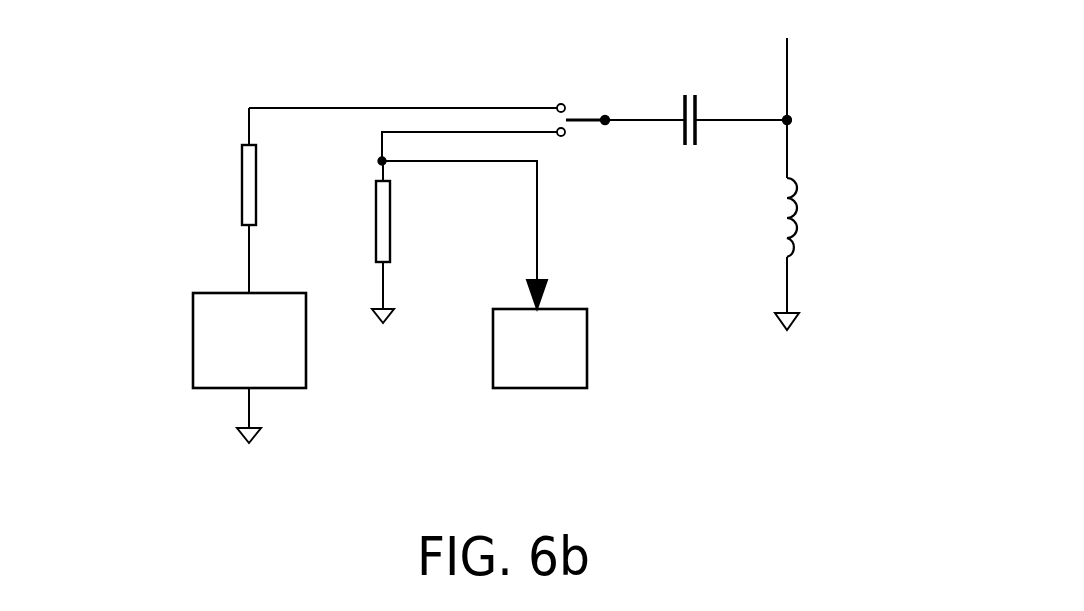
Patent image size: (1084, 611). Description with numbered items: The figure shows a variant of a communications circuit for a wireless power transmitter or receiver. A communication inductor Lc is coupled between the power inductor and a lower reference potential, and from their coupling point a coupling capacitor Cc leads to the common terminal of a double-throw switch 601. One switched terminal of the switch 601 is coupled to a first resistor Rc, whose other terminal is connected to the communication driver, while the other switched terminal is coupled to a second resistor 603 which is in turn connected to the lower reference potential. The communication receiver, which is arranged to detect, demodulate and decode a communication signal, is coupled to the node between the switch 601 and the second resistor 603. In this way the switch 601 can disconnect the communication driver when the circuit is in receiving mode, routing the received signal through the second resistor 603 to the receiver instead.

The double-throw switch 601 is at (588, 116).
The second resistor 603 is at (376, 243).